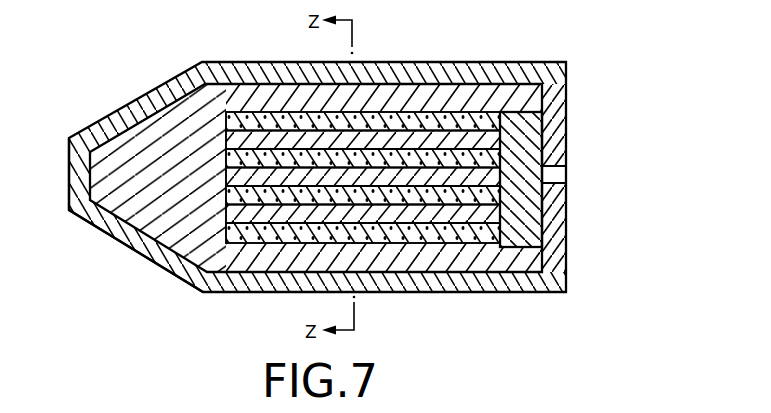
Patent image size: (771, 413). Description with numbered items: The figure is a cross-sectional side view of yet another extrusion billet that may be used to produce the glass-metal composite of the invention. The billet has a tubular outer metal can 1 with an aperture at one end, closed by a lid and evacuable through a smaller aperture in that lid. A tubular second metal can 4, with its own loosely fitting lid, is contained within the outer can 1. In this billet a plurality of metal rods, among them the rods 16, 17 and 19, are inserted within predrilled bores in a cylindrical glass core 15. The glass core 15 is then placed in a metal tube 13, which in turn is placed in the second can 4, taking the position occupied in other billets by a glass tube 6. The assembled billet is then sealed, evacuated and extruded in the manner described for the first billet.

The tubular outer metal can 1 is at (213, 63).
The second metal can 4 is at (260, 97).
The glass tube 6 is at (129, 242).
The metal tube 13 is at (438, 105).
The cylindrical glass core 15 is at (408, 237).
The metal rod 16 is at (226, 132).
The metal rod 17 is at (228, 180).
The metal rod 19 is at (188, 263).